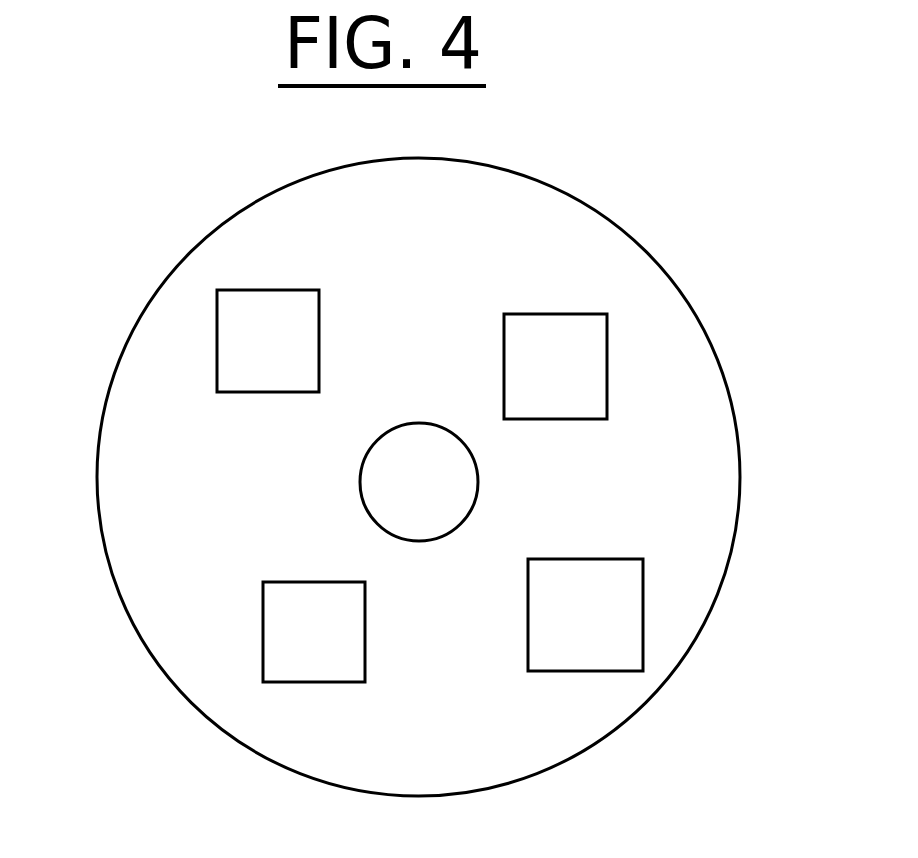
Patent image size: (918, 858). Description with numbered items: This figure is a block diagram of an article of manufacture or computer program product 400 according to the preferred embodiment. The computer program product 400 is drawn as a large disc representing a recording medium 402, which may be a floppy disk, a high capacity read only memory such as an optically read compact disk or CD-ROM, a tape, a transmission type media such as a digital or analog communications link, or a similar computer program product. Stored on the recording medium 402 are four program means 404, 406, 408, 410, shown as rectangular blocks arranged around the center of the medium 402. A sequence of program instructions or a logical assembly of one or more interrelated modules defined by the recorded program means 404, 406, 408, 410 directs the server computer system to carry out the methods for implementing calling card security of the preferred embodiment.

The computer program product 400 is at (693, 269).
The recording medium 402 is at (153, 295).
The program means 404 is at (555, 366).
The program means 406 is at (585, 615).
The program means 408 is at (314, 632).
The program means 410 is at (268, 341).